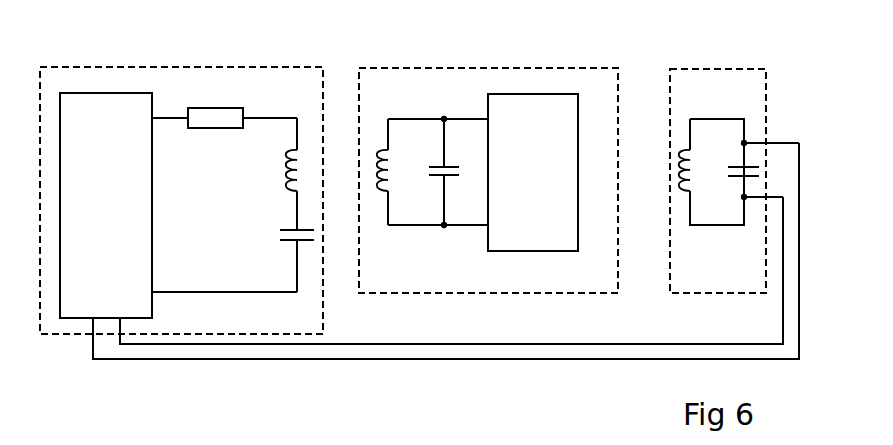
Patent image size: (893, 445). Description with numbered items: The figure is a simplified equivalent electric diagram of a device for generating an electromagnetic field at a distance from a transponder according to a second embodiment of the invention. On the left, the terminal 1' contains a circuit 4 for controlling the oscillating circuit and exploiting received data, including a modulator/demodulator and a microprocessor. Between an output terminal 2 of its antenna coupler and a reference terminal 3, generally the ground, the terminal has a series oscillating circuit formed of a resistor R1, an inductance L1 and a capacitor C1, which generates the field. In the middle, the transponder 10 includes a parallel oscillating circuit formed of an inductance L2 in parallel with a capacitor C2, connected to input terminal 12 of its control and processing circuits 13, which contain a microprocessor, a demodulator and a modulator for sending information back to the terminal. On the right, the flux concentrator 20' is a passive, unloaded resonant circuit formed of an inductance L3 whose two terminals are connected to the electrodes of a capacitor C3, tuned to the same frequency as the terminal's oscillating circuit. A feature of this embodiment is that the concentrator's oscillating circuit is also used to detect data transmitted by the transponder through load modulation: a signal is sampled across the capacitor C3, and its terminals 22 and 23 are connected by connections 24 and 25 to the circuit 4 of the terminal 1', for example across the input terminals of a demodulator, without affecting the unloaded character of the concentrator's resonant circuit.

The terminal 1' is at (181, 181).
The output terminal 2 is at (162, 118).
The reference terminal 3 is at (172, 292).
The circuit 4 is at (152, 203).
The transponder 10 is at (522, 68).
The input terminal 12 is at (462, 228).
The control and processing circuits 13 is at (612, 160).
The flux concentrator 20' is at (715, 205).
The terminal 22 is at (746, 200).
The terminal 23 is at (744, 140).
The connection 24 is at (362, 360).
The connection 25 is at (418, 344).
The resistor R1 is at (215, 129).
The inductance L1 is at (279, 174).
The capacitor C1 is at (288, 261).
The inductance L2 is at (396, 172).
The capacitor C2 is at (449, 172).
The inductance L3 is at (697, 177).
The capacitor C3 is at (736, 161).